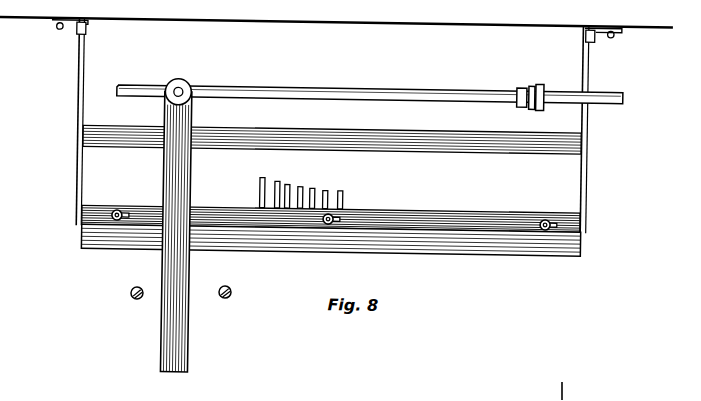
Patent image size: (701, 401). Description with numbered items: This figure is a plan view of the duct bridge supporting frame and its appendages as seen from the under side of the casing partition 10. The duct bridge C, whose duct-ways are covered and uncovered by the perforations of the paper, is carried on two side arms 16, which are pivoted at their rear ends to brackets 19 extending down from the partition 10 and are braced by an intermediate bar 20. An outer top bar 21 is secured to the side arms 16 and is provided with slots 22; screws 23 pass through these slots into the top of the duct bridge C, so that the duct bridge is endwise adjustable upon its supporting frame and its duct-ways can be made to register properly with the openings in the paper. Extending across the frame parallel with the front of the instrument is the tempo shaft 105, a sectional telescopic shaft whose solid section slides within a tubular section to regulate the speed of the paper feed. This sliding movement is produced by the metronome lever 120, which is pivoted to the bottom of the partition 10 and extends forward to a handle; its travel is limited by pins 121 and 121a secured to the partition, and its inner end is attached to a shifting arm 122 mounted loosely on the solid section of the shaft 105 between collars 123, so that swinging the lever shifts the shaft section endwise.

The partition 10 is at (470, 18).
The side arms 16 is at (80, 106).
The brackets 19 is at (77, 29).
The intermediate bar 20 is at (427, 128).
The outer top bar 21 is at (386, 206).
The slots 22 is at (138, 208).
The screws 23 is at (119, 206).
The tempo shaft 105 is at (146, 82).
The metronome lever 120 is at (198, 367).
The pin 121 is at (142, 284).
The pin 121a is at (235, 294).
The shifting arm 122 is at (475, 93).
The collars 123 is at (541, 80).
The duct bridge C is at (315, 185).